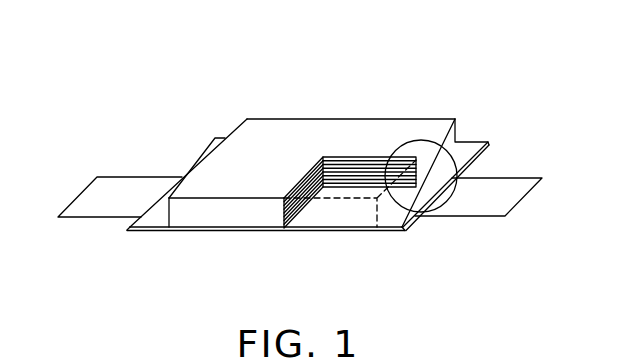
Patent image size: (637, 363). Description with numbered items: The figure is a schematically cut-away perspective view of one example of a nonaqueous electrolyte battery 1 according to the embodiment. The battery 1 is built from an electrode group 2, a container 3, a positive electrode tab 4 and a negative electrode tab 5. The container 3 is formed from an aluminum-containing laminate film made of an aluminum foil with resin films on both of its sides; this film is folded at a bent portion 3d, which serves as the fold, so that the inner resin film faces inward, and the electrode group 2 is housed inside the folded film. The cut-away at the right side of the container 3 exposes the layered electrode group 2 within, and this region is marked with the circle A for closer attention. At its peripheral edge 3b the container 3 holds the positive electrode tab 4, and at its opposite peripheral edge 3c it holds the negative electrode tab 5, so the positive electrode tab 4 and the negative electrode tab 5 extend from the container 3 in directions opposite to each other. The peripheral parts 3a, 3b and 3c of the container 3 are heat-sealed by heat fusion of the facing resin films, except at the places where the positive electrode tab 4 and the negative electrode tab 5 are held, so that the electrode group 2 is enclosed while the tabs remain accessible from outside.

The nonaqueous electrolyte battery 1 is at (222, 80).
The electrode group 2 is at (297, 226).
The container 3 is at (295, 119).
The peripheral part 3a is at (461, 141).
The peripheral edge 3b is at (405, 224).
The peripheral edge 3c is at (148, 220).
The bent portion 3d is at (230, 231).
The positive electrode tab 4 is at (515, 178).
The negative electrode tab 5 is at (128, 185).
The enlarged region A is at (416, 140).